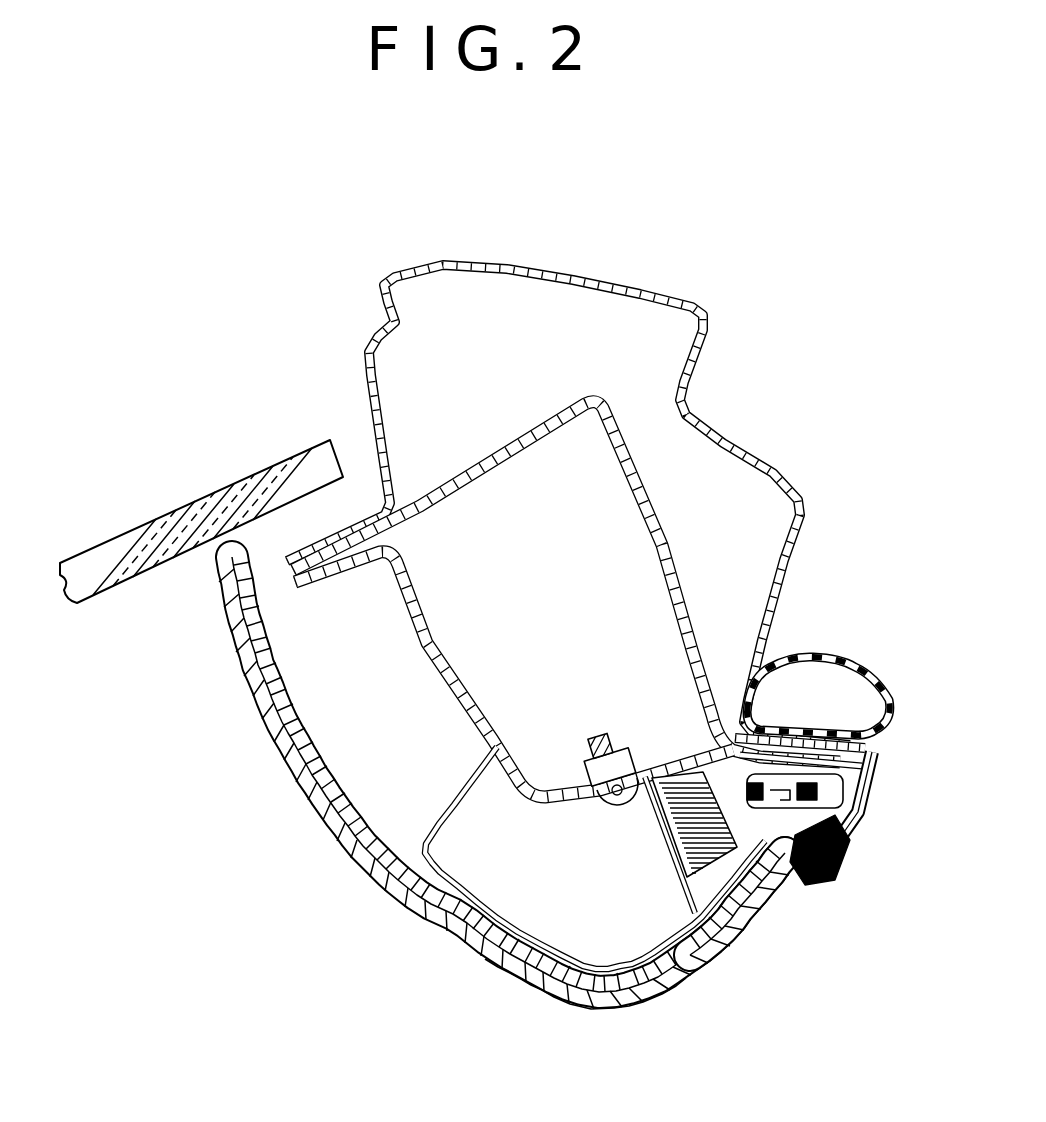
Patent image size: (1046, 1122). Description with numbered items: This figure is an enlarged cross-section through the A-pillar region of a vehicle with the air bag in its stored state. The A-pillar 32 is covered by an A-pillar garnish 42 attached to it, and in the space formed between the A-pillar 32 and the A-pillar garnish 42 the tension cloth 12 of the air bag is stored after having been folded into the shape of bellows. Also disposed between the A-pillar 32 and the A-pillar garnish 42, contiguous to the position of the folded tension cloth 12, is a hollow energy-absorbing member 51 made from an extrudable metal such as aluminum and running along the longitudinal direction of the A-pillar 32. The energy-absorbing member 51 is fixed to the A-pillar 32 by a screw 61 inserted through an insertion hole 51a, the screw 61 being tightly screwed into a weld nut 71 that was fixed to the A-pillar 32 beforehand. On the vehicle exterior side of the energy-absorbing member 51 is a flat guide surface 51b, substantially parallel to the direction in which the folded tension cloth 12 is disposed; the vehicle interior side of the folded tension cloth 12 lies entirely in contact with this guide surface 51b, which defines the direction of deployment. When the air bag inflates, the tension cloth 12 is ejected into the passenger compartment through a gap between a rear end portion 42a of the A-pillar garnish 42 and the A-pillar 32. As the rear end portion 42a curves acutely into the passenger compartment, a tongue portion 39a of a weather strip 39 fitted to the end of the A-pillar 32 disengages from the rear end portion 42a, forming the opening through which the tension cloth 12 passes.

The tension cloth 12 is at (677, 781).
The A-pillar 32 is at (478, 716).
The weather strip 39 is at (862, 807).
The tongue portion 39a is at (830, 875).
The A-pillar garnish 42 is at (398, 884).
The rear end portion 42a is at (755, 900).
The energy-absorbing member 51 is at (533, 957).
The insertion hole 51a is at (667, 953).
The guide surface 51b is at (698, 906).
The screw 61 is at (600, 796).
The weld nut 71 is at (587, 769).